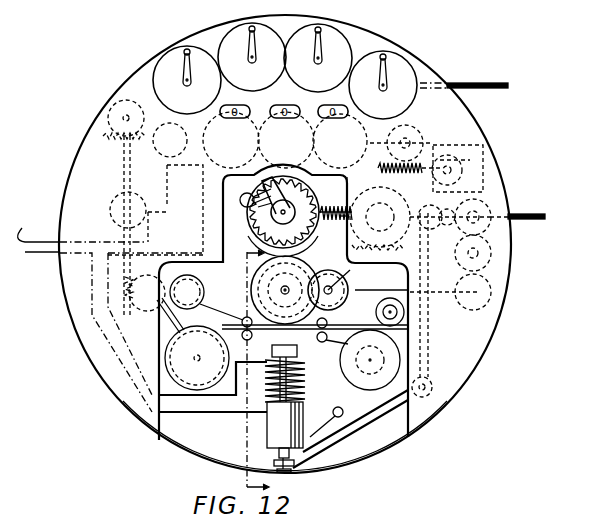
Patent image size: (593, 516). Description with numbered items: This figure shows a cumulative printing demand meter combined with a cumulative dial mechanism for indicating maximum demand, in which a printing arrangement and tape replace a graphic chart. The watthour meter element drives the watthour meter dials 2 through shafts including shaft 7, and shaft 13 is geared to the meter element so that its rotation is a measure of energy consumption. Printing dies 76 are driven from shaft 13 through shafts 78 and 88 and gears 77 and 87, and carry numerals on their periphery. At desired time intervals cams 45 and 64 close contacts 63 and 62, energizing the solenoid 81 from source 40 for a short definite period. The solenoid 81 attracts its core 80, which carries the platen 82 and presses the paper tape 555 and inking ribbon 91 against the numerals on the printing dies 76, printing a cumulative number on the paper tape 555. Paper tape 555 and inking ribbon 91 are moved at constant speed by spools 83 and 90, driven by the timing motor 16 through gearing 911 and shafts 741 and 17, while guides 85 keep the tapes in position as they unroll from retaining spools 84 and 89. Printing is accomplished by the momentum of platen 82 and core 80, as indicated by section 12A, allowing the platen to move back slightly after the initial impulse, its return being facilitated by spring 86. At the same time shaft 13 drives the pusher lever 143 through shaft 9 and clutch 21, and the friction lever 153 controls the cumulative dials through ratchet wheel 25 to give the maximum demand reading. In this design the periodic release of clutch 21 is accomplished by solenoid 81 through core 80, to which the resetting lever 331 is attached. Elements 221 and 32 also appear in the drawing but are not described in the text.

The watthour meter dials 2 is at (303, 25).
The shaft 7 is at (466, 82).
The shaft 13 is at (515, 214).
The timing motor 16 is at (452, 145).
The shaft 17 is at (407, 171).
The clutch 21 is at (372, 195).
The shaft 9 is at (341, 207).
The pawl 221 is at (338, 224).
The gear 87 is at (330, 268).
The shaft 88 is at (345, 282).
The retaining spool 89 is at (384, 309).
The gear 77 is at (487, 284).
The shaft 78 is at (441, 295).
The resetting lever 331 is at (428, 357).
The source 40 is at (509, 150).
The cam 45 is at (180, 138).
The contact 63 is at (170, 177).
The cam 64 is at (110, 210).
The contact 62 is at (150, 238).
The pivot pin 32 is at (245, 195).
The ratchet wheel 25 is at (264, 215).
The pusher lever 143 is at (286, 200).
The friction lever 153 is at (283, 216).
The section line 12A is at (243, 364).
The gearing 911 is at (158, 288).
The spool 90 is at (200, 284).
The shaft 741 is at (168, 321).
The spool 83 is at (166, 352).
The inking ribbon 91 is at (214, 313).
The printing dies 76 is at (250, 293).
The guides 85 is at (243, 319).
The paper tape 555 is at (245, 340).
The retaining spool 84 is at (341, 374).
The platen 82 is at (284, 366).
The solenoid 81 is at (306, 386).
The core 80 is at (303, 410).
The spring 86 is at (312, 433).